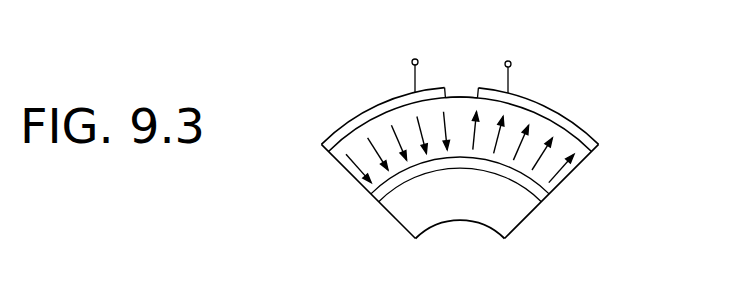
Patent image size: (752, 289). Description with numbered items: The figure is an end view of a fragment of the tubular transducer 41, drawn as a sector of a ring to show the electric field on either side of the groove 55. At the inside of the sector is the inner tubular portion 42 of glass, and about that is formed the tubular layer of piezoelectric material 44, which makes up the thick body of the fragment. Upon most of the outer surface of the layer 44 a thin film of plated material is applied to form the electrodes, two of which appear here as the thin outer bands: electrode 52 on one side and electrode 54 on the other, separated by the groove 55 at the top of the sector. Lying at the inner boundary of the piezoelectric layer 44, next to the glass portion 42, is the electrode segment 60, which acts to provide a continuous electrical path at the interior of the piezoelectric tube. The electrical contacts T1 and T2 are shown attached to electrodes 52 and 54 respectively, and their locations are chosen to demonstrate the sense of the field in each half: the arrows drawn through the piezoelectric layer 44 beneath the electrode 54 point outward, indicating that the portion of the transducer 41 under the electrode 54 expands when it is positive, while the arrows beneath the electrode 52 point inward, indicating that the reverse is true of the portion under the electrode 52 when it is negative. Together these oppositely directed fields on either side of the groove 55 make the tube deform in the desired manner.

The tubular transducer 41 is at (602, 190).
The inner tubular portion 42 is at (407, 219).
The tubular layer of piezoelectric material 44 is at (344, 165).
The electrode 52 is at (360, 117).
The electrode 54 is at (568, 115).
The groove 55 is at (456, 96).
The electrode segment 60 is at (542, 197).
The electrical contact T1 is at (418, 60).
The electrical contact T2 is at (510, 62).